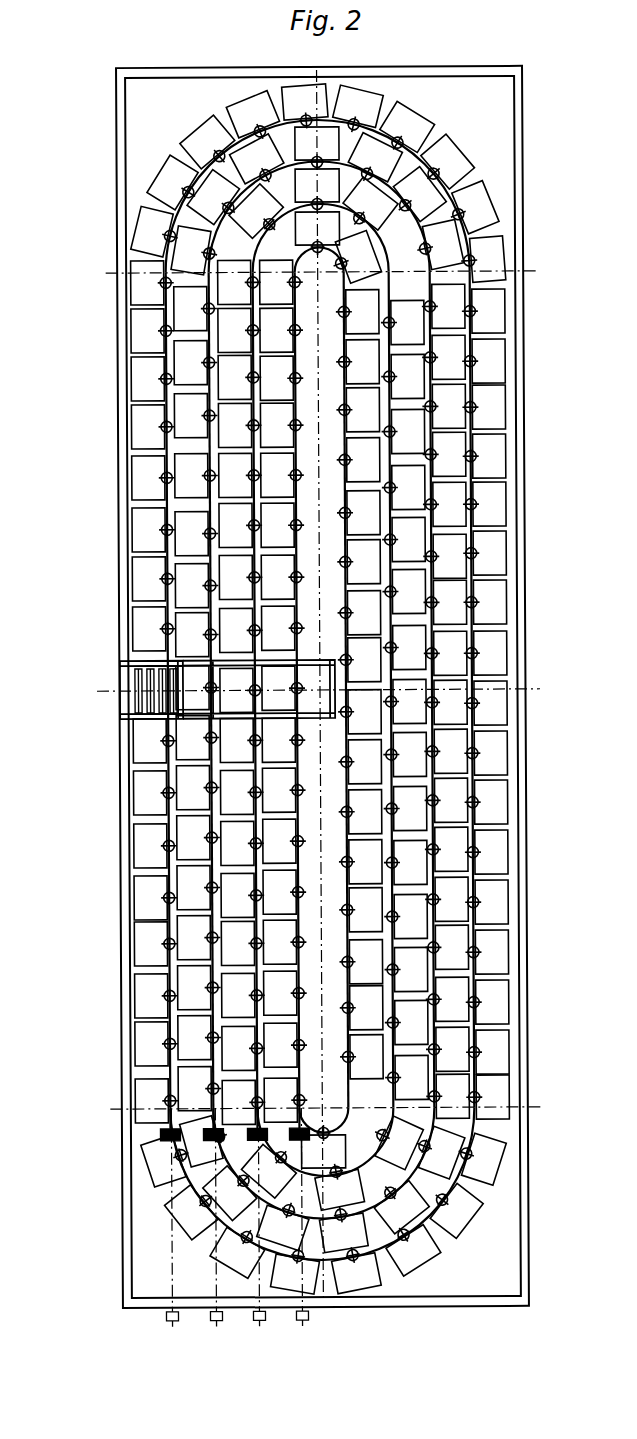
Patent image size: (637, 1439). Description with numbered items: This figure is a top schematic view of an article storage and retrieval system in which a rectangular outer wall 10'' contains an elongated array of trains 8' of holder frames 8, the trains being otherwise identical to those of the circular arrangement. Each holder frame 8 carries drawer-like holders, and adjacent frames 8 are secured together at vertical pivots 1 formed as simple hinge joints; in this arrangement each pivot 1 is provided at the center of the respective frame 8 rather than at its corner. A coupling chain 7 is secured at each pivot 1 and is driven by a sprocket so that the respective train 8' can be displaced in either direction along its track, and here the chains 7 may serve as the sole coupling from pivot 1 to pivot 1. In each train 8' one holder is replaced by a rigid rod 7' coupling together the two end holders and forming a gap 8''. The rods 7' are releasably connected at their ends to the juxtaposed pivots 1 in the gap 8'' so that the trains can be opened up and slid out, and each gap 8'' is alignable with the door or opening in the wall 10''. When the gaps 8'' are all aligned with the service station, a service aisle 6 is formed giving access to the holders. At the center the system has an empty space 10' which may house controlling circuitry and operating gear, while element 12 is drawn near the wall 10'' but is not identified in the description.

The vertical pivot 1 is at (405, 136).
The service aisle 6 is at (278, 698).
The coupling chain 7 is at (321, 766).
The rigid rod 7' is at (270, 692).
The holder frame 8 is at (305, 360).
The train of holder frames 8' is at (322, 690).
The gap 8'' is at (202, 701).
The empty space 10' is at (252, 941).
The rectangular outer wall 10'' is at (298, 697).
The feed device 12 is at (136, 712).